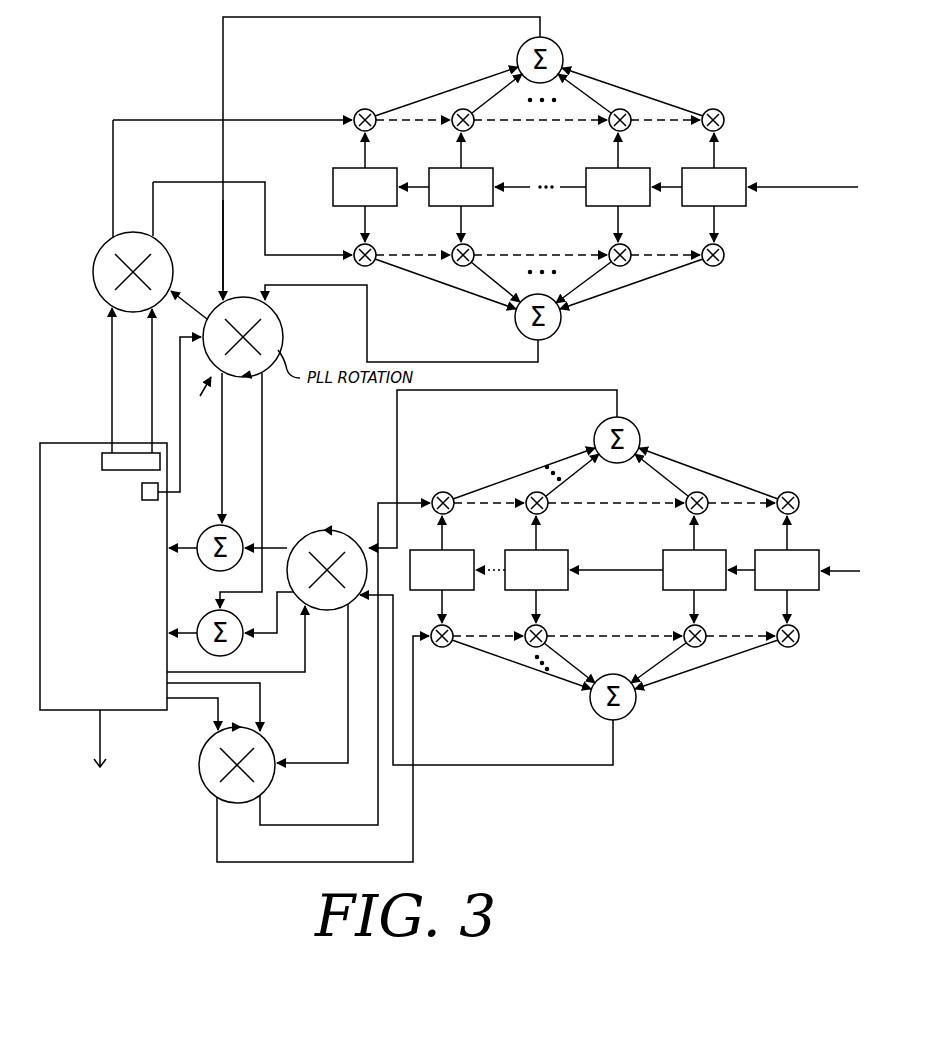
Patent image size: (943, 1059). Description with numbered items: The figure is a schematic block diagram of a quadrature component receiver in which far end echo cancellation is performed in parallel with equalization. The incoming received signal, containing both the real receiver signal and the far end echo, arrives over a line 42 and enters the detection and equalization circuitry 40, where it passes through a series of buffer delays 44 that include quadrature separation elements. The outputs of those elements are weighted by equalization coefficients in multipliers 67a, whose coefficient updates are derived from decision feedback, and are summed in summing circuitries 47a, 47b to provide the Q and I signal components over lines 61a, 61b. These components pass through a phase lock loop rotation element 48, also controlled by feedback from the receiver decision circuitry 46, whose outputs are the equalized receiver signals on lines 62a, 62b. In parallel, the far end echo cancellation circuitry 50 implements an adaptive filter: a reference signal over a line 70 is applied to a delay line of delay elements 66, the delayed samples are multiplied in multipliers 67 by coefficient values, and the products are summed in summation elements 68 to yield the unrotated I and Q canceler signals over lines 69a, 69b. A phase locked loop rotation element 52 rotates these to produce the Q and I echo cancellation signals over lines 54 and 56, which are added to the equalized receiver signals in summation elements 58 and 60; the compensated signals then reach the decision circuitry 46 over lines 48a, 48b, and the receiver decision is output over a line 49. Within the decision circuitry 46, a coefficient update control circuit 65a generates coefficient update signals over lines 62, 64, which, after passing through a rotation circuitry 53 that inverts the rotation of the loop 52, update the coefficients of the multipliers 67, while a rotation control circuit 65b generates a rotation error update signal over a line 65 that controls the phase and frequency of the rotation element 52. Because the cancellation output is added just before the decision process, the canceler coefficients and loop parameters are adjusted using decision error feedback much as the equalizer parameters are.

The detection and equalization circuitry 40 is at (638, 738).
The line 42 is at (852, 571).
The buffer delays 44 is at (452, 590).
The receiver decision circuitry 46 is at (92, 616).
The summing circuitry 47a is at (650, 420).
The summing circuitry 47b is at (635, 712).
The phase lock loop rotation element 48 is at (340, 533).
The line 48a is at (180, 550).
The line 48b is at (180, 632).
The line 49 is at (102, 739).
The far end echo cancellation circuitry 50 is at (194, 397).
The phase locked loop rotation element 52 is at (280, 328).
The rotation circuitry 53 is at (170, 242).
The line 54 is at (219, 437).
The line 56 is at (276, 434).
The summation element 58 is at (200, 532).
The summation element 60 is at (202, 651).
The line 61a is at (512, 389).
The line 61b is at (596, 764).
The line 62 is at (110, 344).
The line 62a is at (279, 548).
The line 62b is at (262, 641).
The line 64 is at (150, 383).
The line 65 is at (180, 335).
The coefficient update control circuit 65a is at (102, 469).
The rotation control circuit 65b is at (140, 494).
The reference delay elements 66 is at (367, 168).
The multipliers 67 is at (372, 127).
The multipliers 67a is at (450, 513).
The summation elements 68 is at (565, 55).
The line 69a is at (223, 256).
The line 69b is at (419, 362).
The line 70 is at (764, 187).